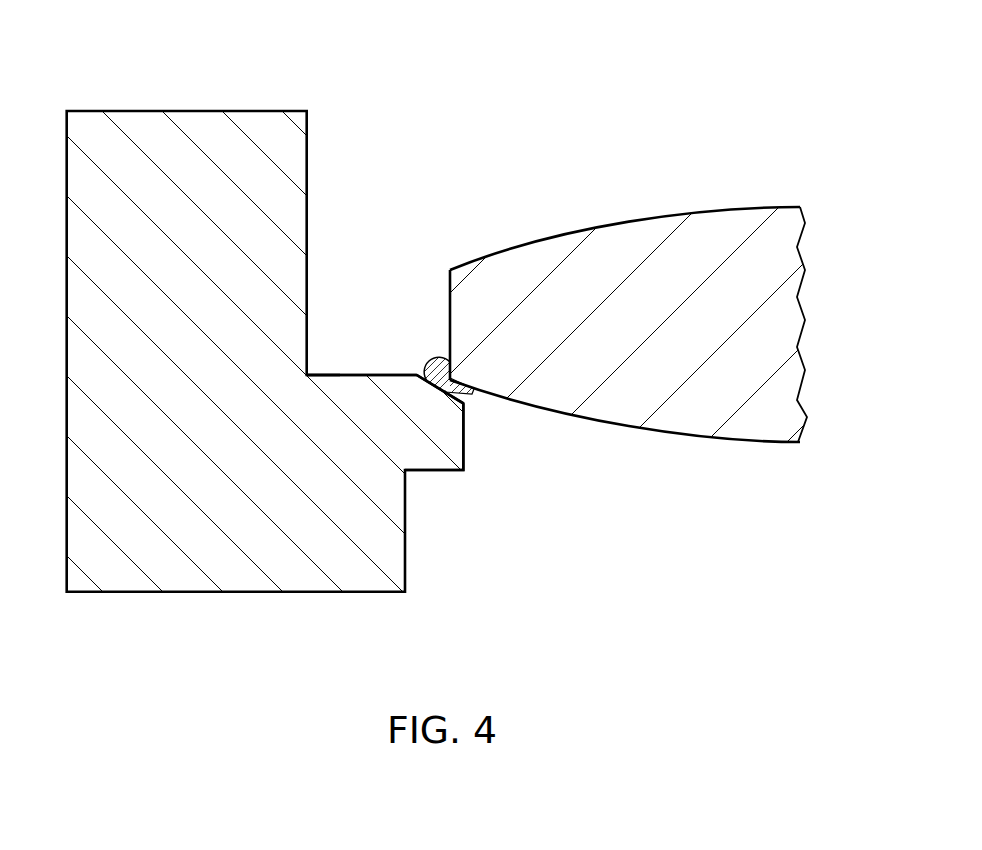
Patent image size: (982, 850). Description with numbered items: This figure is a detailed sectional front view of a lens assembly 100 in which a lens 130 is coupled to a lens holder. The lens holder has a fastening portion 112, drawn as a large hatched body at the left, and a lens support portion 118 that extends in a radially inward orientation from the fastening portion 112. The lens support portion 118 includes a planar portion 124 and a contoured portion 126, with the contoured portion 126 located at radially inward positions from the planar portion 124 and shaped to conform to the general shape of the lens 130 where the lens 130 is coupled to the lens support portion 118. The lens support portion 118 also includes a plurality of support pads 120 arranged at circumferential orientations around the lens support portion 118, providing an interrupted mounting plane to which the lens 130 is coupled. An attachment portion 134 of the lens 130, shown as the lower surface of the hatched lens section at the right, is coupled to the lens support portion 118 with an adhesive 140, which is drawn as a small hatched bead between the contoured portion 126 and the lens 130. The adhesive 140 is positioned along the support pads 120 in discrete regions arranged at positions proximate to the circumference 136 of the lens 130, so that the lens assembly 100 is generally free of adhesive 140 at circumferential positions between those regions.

The lens assembly 100 is at (491, 312).
The fastening portion 112 is at (193, 110).
The lens support portion 118 is at (331, 325).
The support pads 120 is at (464, 458).
The planar portion 124 is at (355, 375).
The contoured portion 126 is at (457, 393).
The lens 130 is at (632, 293).
The attachment portion 134 is at (533, 408).
The circumference 136 is at (450, 278).
The adhesive 140 is at (437, 357).